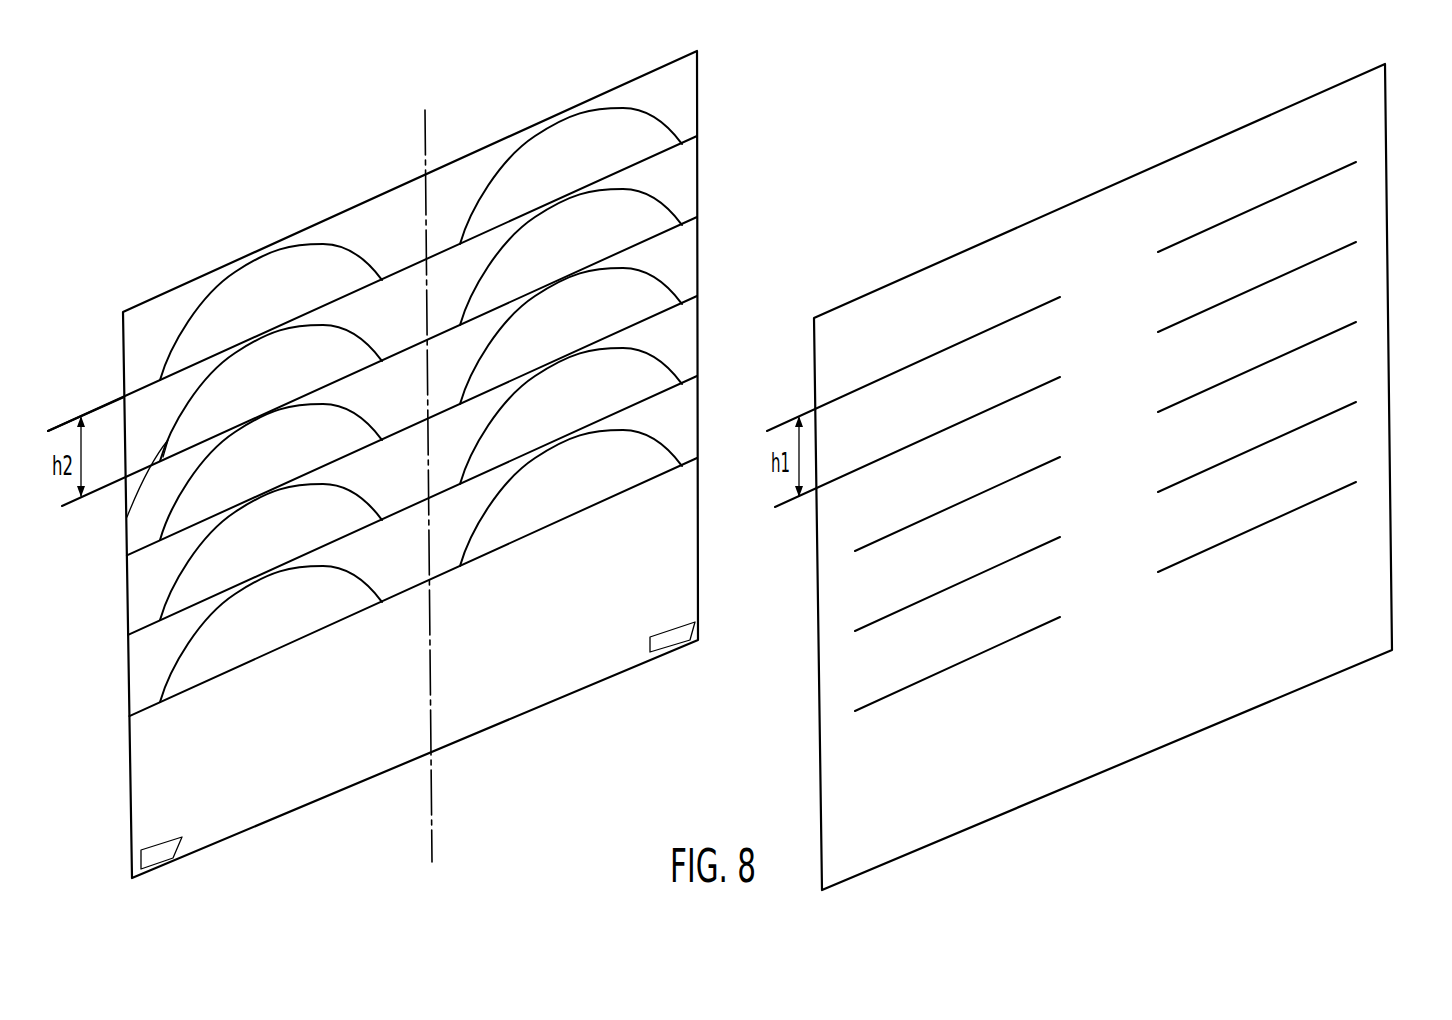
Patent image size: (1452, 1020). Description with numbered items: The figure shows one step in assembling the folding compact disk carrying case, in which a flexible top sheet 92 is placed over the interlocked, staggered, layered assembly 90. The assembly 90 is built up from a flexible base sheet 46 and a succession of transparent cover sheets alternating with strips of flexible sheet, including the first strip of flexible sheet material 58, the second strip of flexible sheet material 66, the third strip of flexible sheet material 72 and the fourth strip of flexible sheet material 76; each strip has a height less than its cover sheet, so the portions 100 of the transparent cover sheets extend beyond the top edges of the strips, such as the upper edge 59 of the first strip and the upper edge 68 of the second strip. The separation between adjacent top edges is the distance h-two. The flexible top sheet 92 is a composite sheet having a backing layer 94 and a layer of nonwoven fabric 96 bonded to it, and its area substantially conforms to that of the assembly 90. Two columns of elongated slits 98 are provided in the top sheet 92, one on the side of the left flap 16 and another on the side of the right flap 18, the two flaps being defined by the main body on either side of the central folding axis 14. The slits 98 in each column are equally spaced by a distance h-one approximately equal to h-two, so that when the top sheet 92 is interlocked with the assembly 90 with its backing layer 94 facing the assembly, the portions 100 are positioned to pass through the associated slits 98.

The central folding axis 14 is at (427, 120).
The left flap 16 is at (173, 747).
The right flap 18 is at (635, 565).
The flexible base sheet 46 is at (678, 92).
The first strip of flexible sheet material 58 is at (673, 163).
The upper edge of the first strip of flexible sheet material 59 is at (153, 383).
The second strip of flexible sheet material 66 is at (673, 242).
The upper edge of the second strip of flexible sheet material 68 is at (132, 508).
The third strip of flexible sheet material 72 is at (677, 323).
The fourth strip of flexible sheet material 76 is at (678, 405).
The interlocked, staggered, layered assembly 90 is at (400, 181).
The flexible top sheet 92 is at (1387, 122).
The backing layer 94 is at (1337, 170).
The layer of nonwoven fabric 96 is at (1355, 202).
The elongated slits 98 is at (1000, 404).
The portions of the transparent cover sheets 100 is at (593, 217).